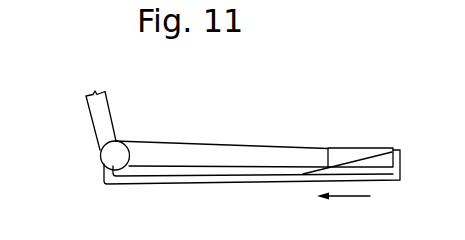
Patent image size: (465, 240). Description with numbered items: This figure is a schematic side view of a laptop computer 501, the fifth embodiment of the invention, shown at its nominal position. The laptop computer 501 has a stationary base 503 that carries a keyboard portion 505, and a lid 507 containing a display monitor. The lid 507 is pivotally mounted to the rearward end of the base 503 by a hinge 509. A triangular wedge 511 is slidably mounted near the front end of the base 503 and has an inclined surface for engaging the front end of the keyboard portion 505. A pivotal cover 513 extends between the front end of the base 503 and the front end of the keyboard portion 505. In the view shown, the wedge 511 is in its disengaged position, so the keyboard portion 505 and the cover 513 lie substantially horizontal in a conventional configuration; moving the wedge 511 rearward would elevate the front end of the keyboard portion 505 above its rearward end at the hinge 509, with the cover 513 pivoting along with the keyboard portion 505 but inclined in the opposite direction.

The laptop computer 501 is at (280, 84).
The stationary base 503 is at (182, 185).
The keyboard portion 505 is at (205, 143).
The lid 507 is at (110, 113).
The hinge 509 is at (116, 156).
The triangular wedge 511 is at (378, 147).
The pivotal cover 513 is at (344, 148).